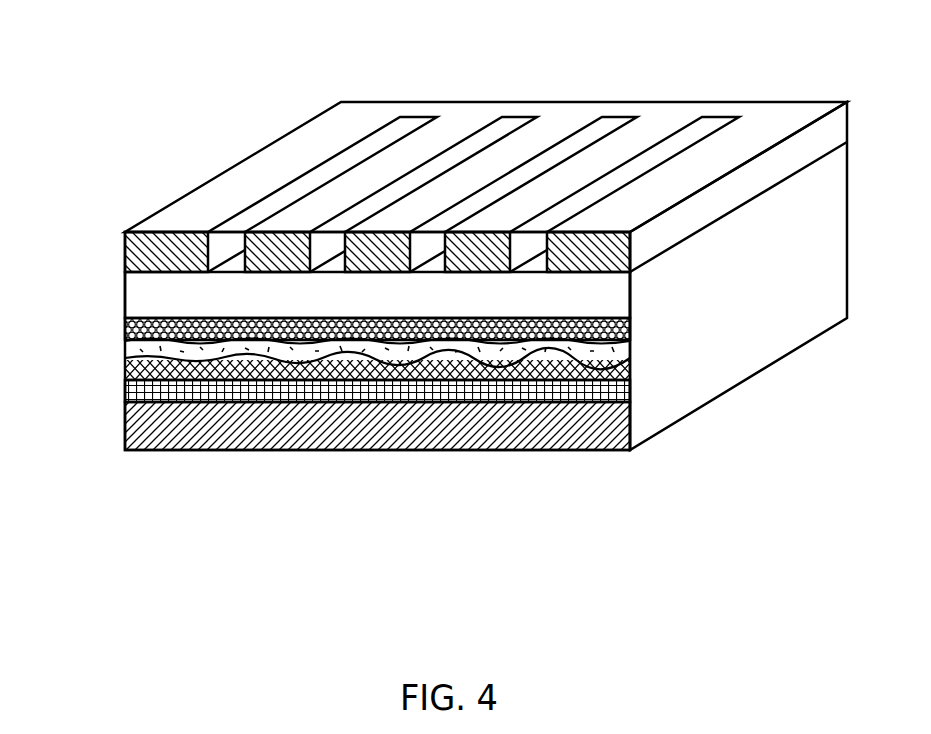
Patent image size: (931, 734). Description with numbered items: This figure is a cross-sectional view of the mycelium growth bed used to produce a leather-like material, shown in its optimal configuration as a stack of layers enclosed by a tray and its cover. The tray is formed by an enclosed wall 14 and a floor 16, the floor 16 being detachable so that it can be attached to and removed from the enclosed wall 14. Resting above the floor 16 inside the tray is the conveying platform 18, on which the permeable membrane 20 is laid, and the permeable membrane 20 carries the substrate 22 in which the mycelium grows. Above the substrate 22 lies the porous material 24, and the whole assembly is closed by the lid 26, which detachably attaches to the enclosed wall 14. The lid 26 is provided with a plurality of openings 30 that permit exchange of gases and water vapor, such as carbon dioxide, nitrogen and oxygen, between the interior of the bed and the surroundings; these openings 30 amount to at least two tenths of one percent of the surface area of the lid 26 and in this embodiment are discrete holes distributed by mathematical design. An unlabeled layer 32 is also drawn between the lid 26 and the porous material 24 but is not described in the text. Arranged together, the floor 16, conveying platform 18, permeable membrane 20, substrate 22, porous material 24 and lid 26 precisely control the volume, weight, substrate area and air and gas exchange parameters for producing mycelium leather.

The enclosed wall 14 is at (697, 337).
The floor 16 is at (137, 425).
The conveying platform 18 is at (138, 393).
The permeable membrane 20 is at (137, 372).
The substrate 22 is at (138, 259).
The porous material 24 is at (137, 335).
The lid 26 is at (828, 132).
The plurality of openings 30 is at (257, 215).
The top layer 32 is at (137, 297).